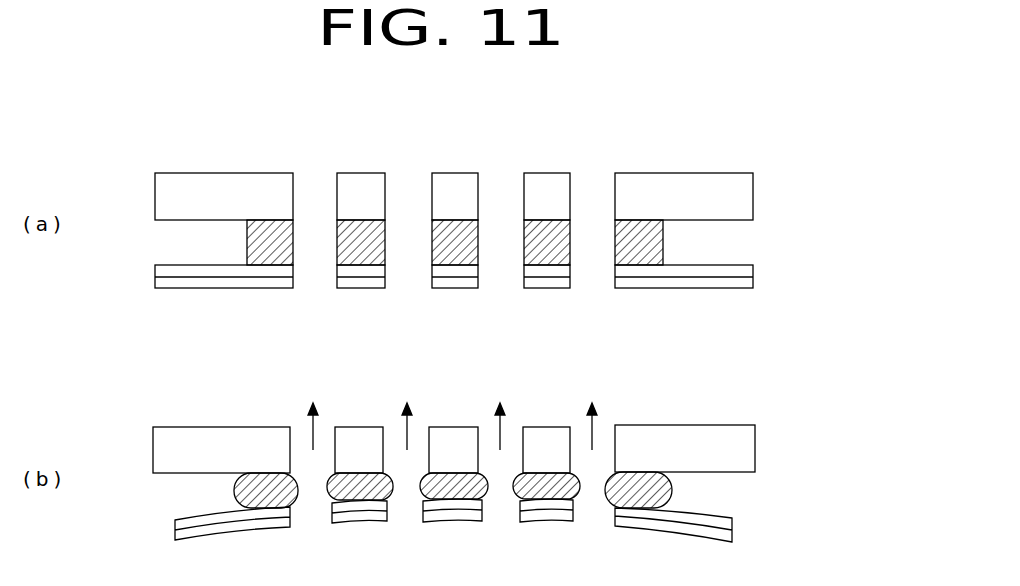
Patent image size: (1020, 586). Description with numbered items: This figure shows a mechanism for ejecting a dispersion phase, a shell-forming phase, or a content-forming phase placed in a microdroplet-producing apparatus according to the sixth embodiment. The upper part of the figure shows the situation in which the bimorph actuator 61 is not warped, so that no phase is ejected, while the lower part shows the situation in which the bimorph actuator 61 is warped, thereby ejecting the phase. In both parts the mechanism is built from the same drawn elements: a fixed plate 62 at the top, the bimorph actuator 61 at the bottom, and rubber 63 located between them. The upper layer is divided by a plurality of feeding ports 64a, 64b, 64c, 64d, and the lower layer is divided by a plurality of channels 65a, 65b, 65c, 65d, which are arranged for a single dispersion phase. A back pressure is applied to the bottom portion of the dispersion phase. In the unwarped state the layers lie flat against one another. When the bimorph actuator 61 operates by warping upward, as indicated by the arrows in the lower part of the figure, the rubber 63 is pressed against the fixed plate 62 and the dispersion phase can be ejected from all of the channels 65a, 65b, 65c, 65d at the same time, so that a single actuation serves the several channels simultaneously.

The bimorph actuator 61 is at (753, 273).
The fixed plate 62 is at (753, 182).
The rubber 63 is at (663, 243).
The feeding port 64a is at (313, 196).
The feeding port 64b is at (410, 196).
The feeding port 64c is at (500, 196).
The feeding port 64d is at (592, 196).
The channel 65a is at (313, 253).
The channel 65b is at (412, 253).
The channel 65c is at (502, 253).
The channel 65d is at (592, 253).